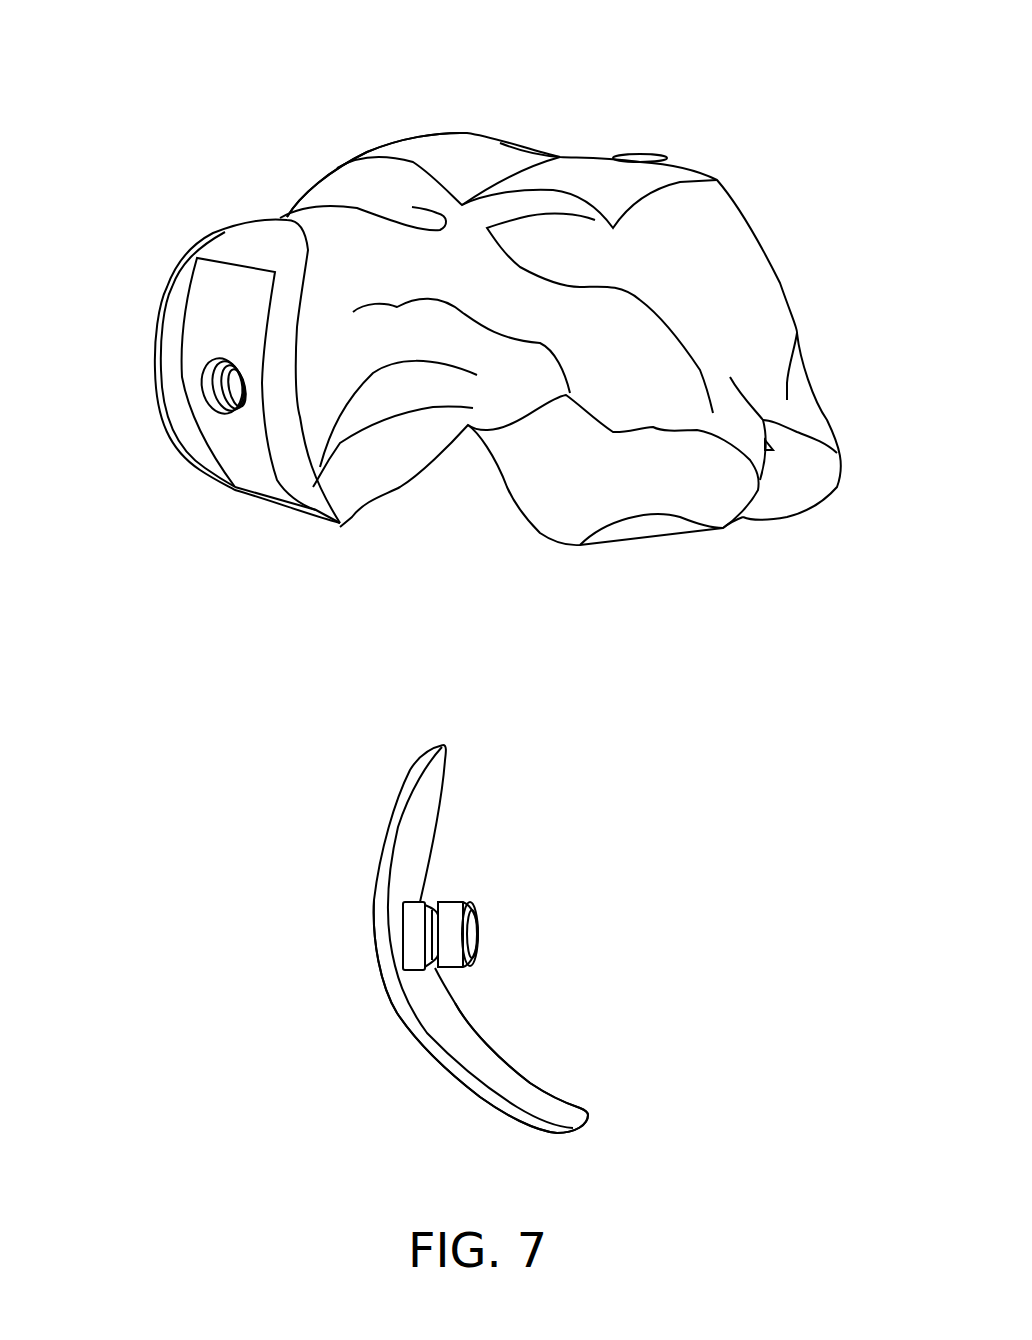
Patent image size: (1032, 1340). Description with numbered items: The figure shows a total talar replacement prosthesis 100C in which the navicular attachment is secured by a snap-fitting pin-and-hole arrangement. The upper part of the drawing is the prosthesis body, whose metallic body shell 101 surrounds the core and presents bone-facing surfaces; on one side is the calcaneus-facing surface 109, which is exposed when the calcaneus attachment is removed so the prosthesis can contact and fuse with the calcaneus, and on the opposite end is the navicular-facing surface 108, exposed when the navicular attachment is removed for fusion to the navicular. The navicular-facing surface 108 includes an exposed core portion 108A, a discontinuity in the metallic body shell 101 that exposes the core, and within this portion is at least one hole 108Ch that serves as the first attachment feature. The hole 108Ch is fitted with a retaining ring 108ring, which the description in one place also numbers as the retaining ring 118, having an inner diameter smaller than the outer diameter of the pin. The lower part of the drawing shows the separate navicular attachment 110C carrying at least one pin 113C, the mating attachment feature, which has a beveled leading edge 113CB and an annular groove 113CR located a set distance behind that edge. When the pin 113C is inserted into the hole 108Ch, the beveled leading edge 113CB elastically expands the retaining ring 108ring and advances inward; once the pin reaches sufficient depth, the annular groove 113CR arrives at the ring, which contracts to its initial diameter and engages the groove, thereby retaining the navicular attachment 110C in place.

The total talar replacement prosthesis 100C is at (664, 86).
The metallic body shell 101 is at (353, 173).
The navicular-facing surface 108 is at (237, 243).
The exposed core portion 108A is at (200, 308).
The hole 108Ch is at (190, 396).
The retaining ring 108ring is at (212, 426).
The calcaneus-facing surface 109 is at (810, 518).
The navicular attachment 110C is at (559, 838).
The annular groove 113CR is at (447, 882).
The pin 113C is at (467, 912).
The beveled leading edge 113CB is at (503, 973).
The curved body 118 is at (543, 1084).